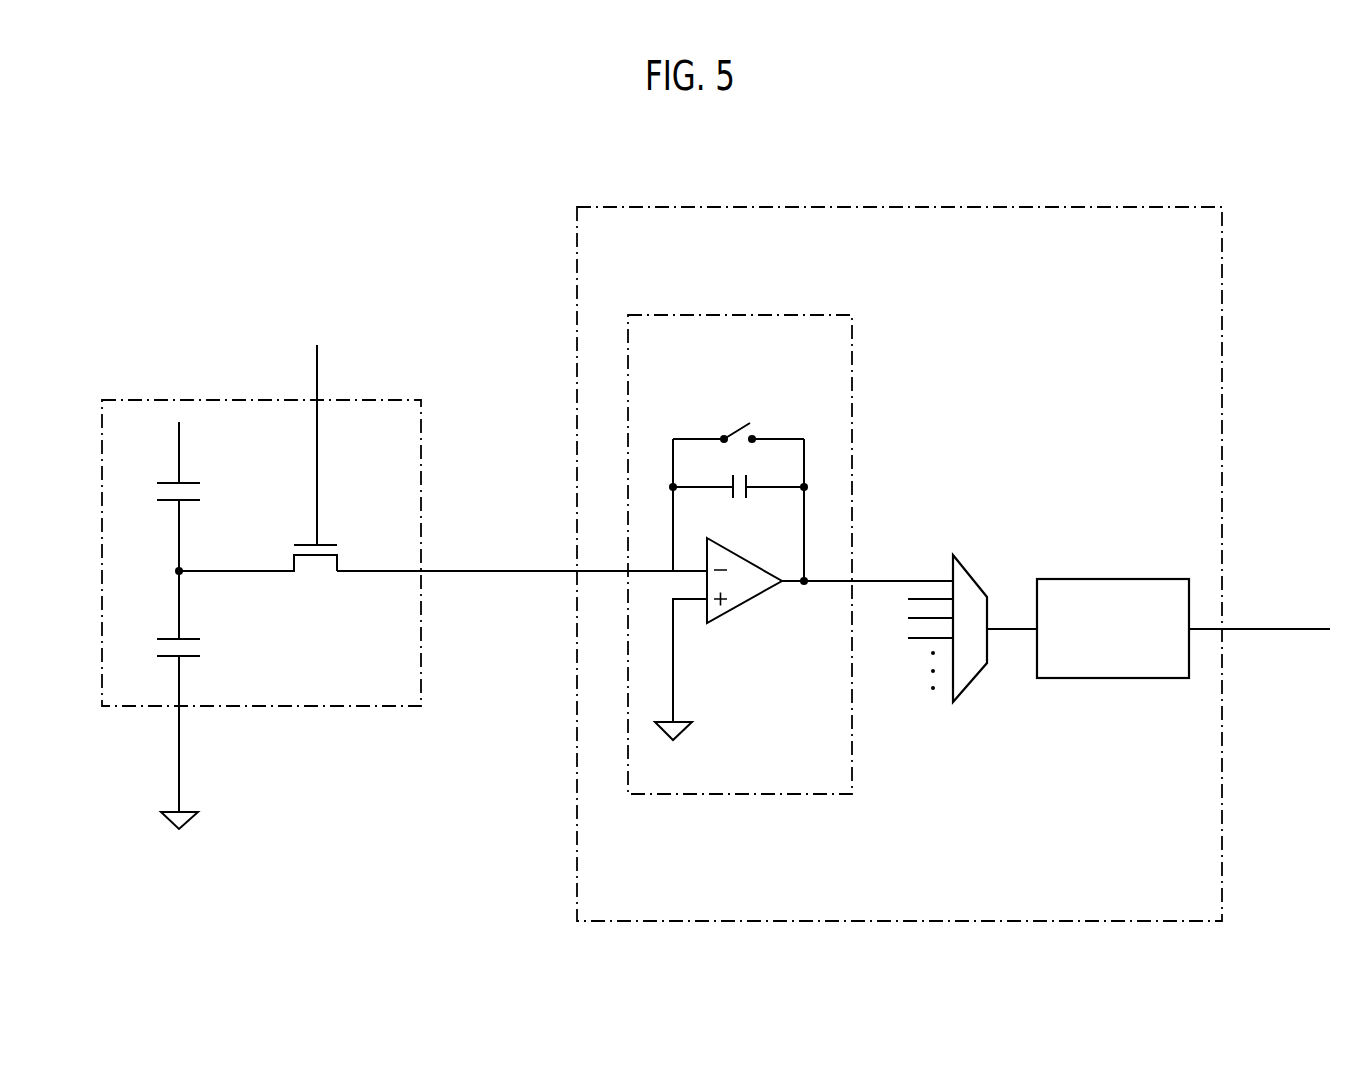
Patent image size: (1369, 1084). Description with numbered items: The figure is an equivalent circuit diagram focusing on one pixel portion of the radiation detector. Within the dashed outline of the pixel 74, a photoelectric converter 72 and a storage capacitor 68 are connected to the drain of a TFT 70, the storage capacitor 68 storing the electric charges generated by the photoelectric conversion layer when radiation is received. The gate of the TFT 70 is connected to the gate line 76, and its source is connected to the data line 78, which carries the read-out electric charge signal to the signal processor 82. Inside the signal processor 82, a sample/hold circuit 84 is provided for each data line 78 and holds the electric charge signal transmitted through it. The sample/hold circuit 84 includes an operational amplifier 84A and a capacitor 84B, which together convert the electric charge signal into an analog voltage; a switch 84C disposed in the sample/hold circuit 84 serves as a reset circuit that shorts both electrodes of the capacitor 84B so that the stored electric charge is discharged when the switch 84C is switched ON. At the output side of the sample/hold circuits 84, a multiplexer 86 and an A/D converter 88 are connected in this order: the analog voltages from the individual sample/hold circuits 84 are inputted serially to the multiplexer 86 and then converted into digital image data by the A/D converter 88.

The storage capacitor 68 is at (190, 639).
The TFT 70 is at (325, 545).
The photoelectric converter 72 is at (190, 483).
The pixel 74 is at (172, 400).
The gate line 76 is at (318, 373).
The data line 78 is at (500, 575).
The signal processor 82 is at (1017, 207).
The sample/hold circuit 84 is at (732, 315).
The operational amplifier 84A is at (750, 604).
The capacitor 84B is at (750, 498).
The switch 84C is at (748, 424).
The multiplexer 86 is at (972, 579).
The A/D converter 88 is at (1110, 579).